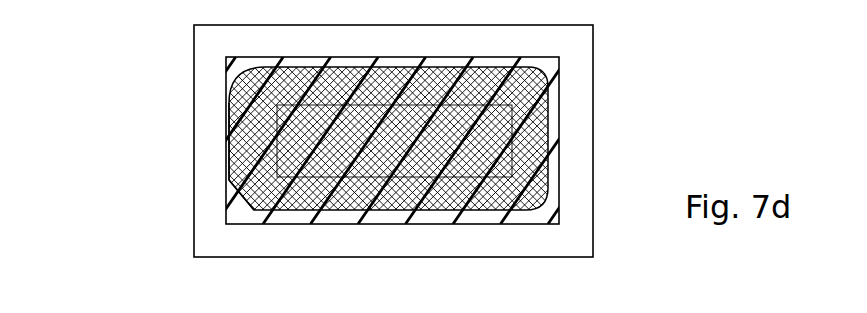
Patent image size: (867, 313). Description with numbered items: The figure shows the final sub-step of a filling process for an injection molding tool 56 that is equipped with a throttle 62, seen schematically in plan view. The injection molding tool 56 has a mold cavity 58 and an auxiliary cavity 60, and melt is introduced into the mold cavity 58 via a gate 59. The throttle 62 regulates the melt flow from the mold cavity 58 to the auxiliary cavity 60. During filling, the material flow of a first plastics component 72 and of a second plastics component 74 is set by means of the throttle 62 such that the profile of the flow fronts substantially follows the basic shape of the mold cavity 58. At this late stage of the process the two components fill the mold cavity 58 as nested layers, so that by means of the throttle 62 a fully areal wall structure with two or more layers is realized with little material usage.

The injection molding tool 56 is at (104, 36).
The mold cavity 58 is at (525, 130).
The gate 59 is at (450, 143).
The auxiliary cavity 60 is at (233, 130).
The throttle 62 is at (233, 178).
The first plastics component 72 is at (230, 210).
The second plastics component 74 is at (553, 78).